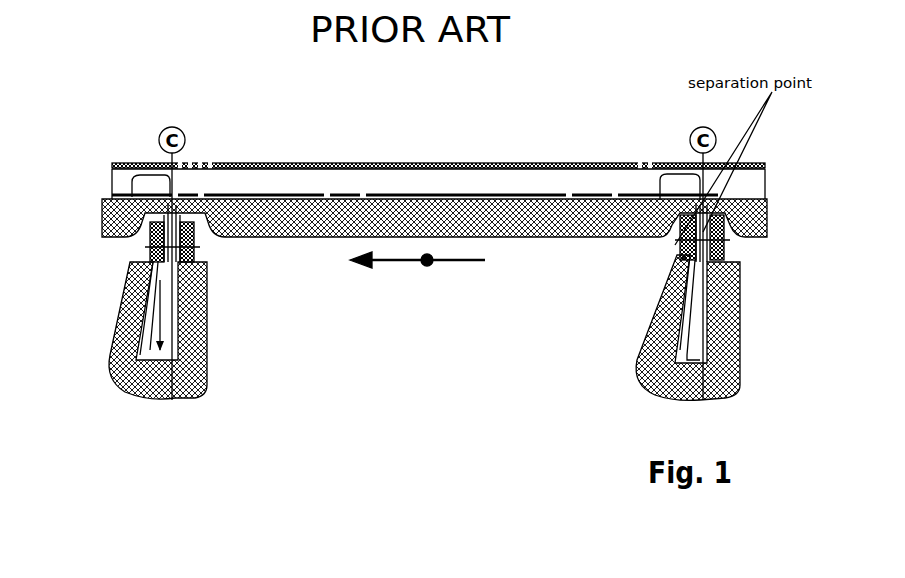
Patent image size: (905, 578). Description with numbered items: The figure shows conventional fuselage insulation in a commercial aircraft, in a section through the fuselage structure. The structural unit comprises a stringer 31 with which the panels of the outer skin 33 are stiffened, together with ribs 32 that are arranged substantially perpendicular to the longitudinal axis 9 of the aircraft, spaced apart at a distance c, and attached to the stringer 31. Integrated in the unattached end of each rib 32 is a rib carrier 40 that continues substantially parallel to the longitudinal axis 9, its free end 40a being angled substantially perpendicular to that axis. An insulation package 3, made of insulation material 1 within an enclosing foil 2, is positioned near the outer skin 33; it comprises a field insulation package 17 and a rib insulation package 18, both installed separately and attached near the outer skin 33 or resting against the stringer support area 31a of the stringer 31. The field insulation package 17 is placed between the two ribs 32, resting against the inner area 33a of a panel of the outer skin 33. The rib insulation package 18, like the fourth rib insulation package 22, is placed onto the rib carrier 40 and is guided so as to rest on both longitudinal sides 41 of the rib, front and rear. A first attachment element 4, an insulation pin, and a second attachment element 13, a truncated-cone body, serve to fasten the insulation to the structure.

The insulation material 1 is at (677, 383).
The enclosing foil 2 is at (740, 372).
The insulation package 3 is at (350, 207).
The first attachment element 4 is at (148, 245).
The longitudinal axis of the aircraft 9 is at (427, 260).
The second attachment element 13 is at (190, 250).
The field insulation package 17 is at (513, 217).
The rib insulation package 18 is at (192, 385).
The rib insulation package, fourth 22 is at (680, 252).
The stringer 31 is at (300, 180).
The stringer support area 31a is at (482, 205).
The rib 32 is at (165, 192).
The outer skin 33 is at (472, 160).
The inner area of a panel of the outer skin 33a is at (418, 178).
The rib carrier 40 is at (135, 370).
The end of the rib carrier 40a is at (125, 385).
The longitudinal side of the rib 41 is at (160, 350).